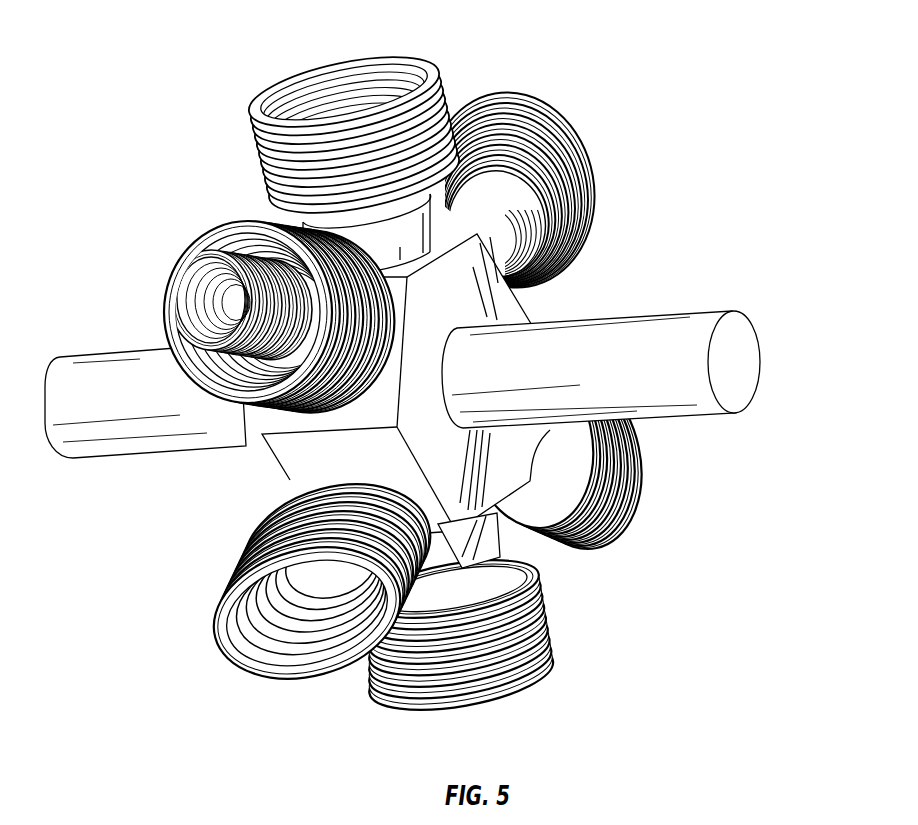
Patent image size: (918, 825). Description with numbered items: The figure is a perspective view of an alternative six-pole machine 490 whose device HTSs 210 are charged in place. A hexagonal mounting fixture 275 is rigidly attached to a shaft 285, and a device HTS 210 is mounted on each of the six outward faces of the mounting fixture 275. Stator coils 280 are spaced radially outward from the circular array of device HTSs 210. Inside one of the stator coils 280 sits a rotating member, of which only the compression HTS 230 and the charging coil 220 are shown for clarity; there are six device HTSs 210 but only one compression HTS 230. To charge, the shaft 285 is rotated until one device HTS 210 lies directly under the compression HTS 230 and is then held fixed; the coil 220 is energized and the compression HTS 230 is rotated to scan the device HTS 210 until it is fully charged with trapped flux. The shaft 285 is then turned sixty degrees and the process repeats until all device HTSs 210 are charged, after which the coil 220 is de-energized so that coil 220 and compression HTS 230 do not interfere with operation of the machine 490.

The machine 490 is at (179, 60).
The stator coils 280 is at (562, 127).
The device HTS 210 is at (420, 231).
The hexagonal mounting fixture 275 is at (503, 317).
The shaft 285 is at (736, 346).
The charging coil 220 is at (246, 355).
The compression HTS 230 is at (231, 385).